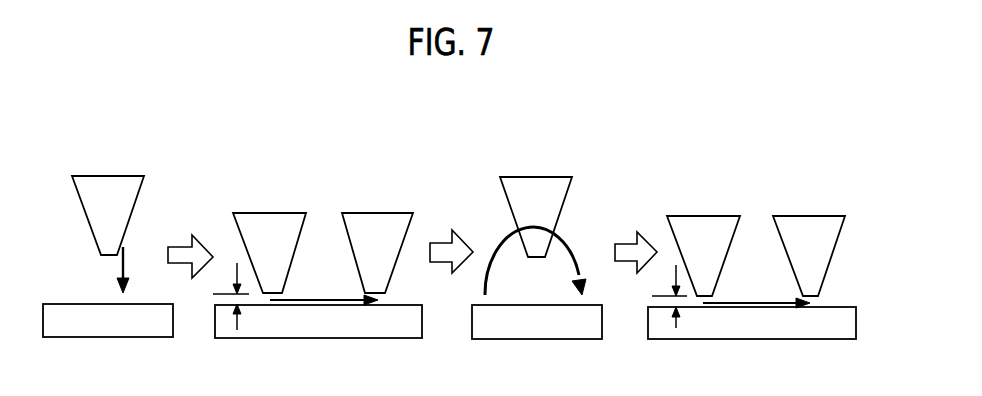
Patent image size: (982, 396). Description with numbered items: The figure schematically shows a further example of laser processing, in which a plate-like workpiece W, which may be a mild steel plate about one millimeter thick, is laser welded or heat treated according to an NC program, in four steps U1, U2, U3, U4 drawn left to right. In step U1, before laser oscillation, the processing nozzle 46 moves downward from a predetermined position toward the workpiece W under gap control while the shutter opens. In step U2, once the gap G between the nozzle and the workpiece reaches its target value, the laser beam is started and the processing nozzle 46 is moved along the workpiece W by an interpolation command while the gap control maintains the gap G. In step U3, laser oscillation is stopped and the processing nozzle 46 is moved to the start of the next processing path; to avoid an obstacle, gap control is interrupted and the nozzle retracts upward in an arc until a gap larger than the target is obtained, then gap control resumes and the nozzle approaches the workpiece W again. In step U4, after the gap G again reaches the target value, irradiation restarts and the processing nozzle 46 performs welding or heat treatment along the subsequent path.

The processing nozzle 46 is at (100, 185).
The workpiece W is at (58, 327).
The gap G is at (450, 296).
The step U1 is at (111, 309).
The step U2 is at (341, 294).
The step U3 is at (535, 300).
The step U4 is at (738, 294).